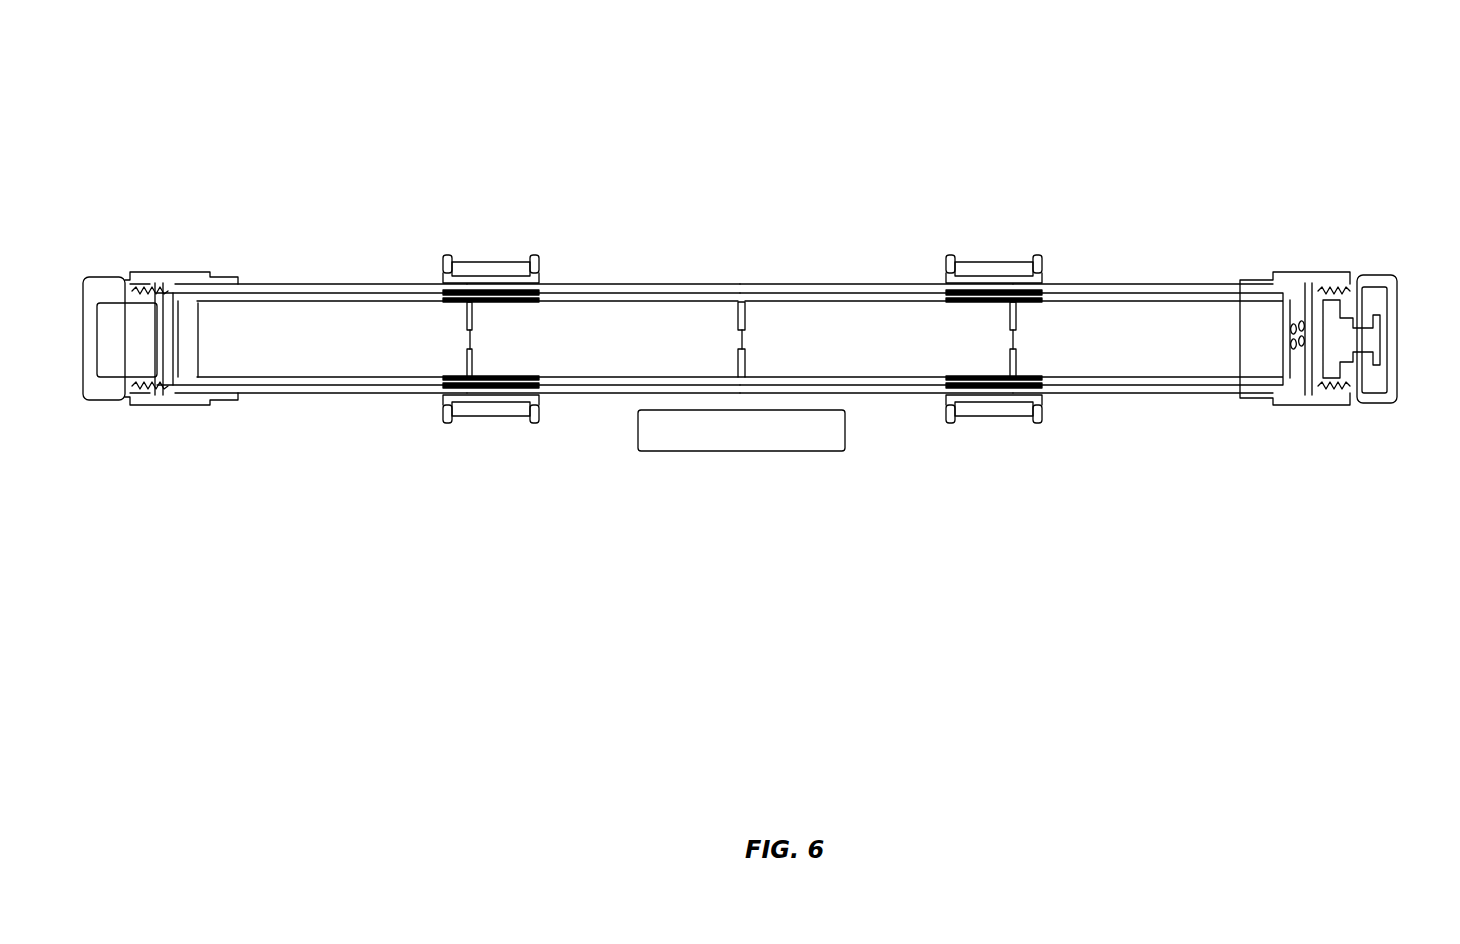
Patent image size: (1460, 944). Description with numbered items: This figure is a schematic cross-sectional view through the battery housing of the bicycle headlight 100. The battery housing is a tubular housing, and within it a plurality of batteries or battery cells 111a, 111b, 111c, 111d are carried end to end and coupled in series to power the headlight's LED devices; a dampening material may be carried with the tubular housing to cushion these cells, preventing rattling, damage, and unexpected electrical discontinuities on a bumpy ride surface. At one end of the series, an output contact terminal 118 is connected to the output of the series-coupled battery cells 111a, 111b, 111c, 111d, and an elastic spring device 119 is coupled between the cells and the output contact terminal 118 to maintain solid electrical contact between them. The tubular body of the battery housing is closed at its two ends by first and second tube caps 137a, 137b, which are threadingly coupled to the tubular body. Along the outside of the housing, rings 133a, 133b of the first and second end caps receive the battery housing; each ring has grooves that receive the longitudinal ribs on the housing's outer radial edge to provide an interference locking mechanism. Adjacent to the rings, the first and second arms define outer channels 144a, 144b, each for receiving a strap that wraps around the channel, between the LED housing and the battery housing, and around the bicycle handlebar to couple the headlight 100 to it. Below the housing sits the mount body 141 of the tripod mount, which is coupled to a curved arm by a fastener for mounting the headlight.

The bicycle headlight 100 is at (1068, 128).
The battery cell 111a is at (332, 350).
The battery cell 111b is at (602, 365).
The battery cell 111c is at (850, 368).
The battery cell 111d is at (1207, 345).
The output contact terminal 118 is at (1352, 335).
The elastic spring device 119 is at (1297, 343).
The ring 133a is at (1043, 262).
The ring 133b is at (540, 258).
The first tube cap 137a is at (1375, 395).
The second tube cap 137b is at (101, 393).
The mount body 141 is at (722, 432).
The outer channel 144a is at (983, 258).
The outer channel 144b is at (473, 258).